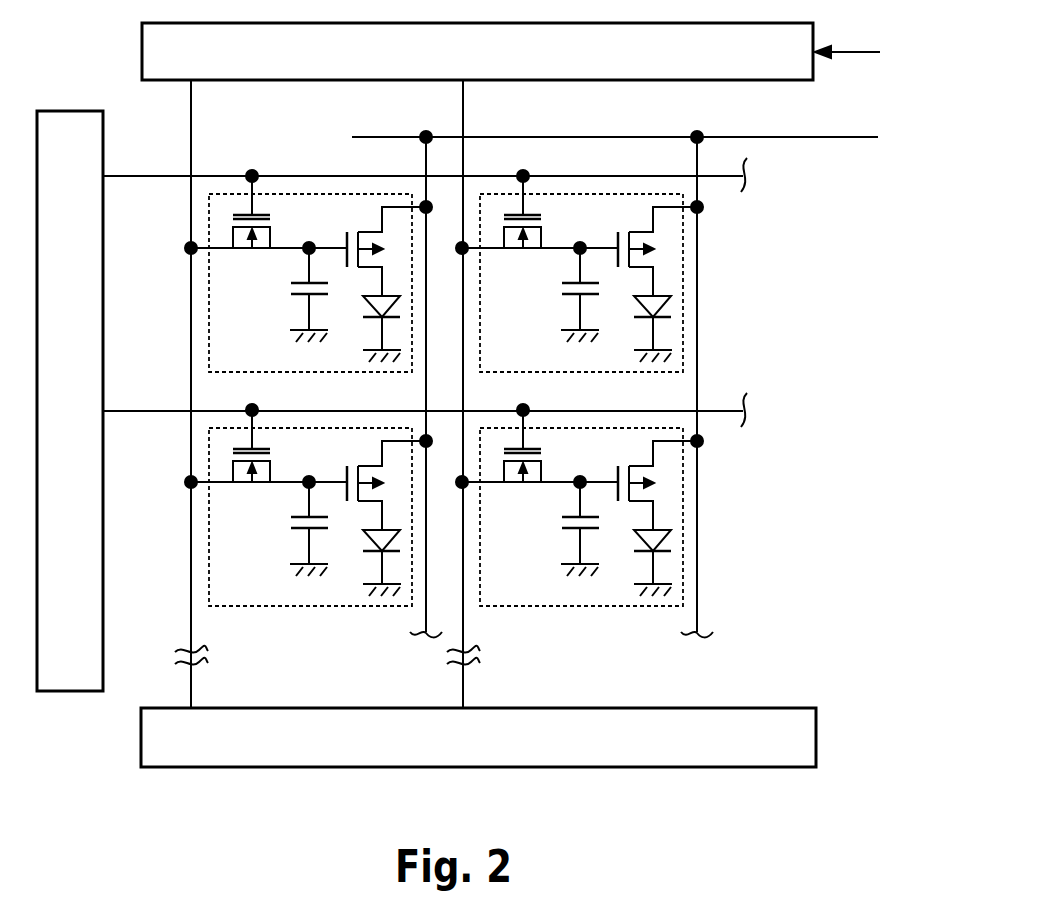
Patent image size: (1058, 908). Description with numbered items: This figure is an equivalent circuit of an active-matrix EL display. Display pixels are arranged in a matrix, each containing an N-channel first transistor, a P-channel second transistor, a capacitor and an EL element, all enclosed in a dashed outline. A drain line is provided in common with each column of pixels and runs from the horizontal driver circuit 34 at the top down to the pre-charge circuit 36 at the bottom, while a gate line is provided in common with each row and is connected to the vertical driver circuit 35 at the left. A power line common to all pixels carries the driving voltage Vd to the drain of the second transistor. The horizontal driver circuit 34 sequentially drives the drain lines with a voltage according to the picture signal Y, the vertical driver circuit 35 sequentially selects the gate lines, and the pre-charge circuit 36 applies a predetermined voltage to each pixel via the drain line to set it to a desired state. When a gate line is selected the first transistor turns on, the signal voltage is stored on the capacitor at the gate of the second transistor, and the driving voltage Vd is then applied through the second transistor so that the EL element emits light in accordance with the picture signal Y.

The horizontal driver circuit 34 is at (703, 62).
The vertical driver circuit 35 is at (65, 680).
The pre-charge circuit 36 is at (762, 718).
The picture signal Y is at (860, 52).
The driving voltage Vd is at (631, 136).